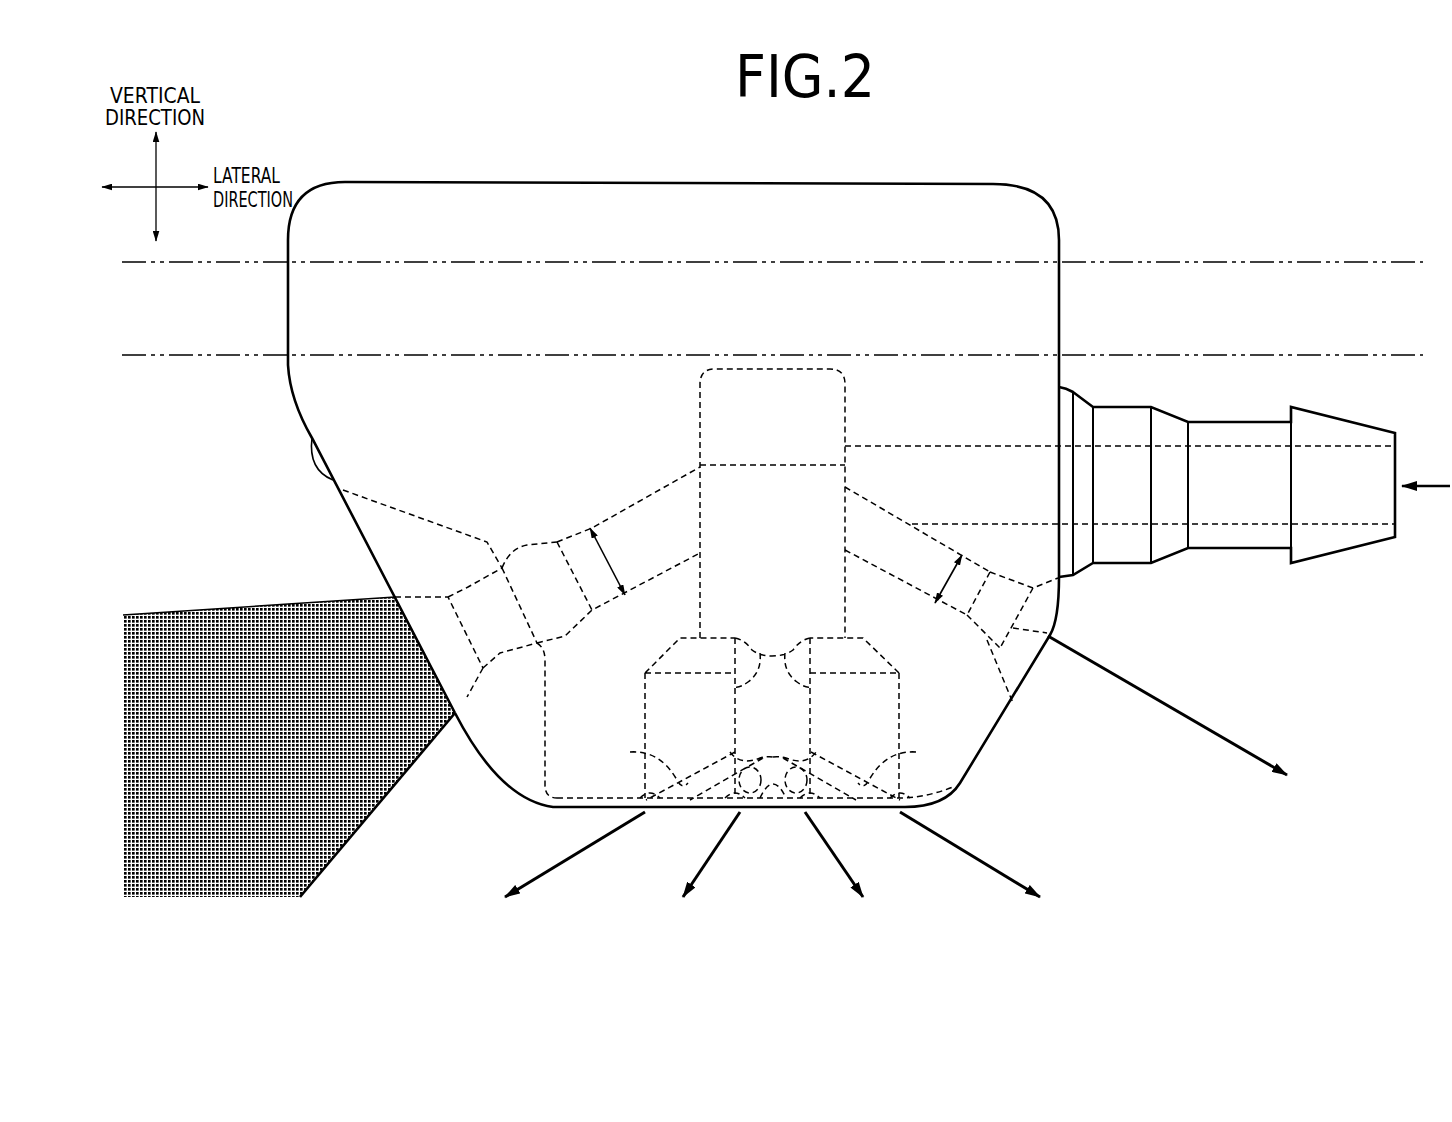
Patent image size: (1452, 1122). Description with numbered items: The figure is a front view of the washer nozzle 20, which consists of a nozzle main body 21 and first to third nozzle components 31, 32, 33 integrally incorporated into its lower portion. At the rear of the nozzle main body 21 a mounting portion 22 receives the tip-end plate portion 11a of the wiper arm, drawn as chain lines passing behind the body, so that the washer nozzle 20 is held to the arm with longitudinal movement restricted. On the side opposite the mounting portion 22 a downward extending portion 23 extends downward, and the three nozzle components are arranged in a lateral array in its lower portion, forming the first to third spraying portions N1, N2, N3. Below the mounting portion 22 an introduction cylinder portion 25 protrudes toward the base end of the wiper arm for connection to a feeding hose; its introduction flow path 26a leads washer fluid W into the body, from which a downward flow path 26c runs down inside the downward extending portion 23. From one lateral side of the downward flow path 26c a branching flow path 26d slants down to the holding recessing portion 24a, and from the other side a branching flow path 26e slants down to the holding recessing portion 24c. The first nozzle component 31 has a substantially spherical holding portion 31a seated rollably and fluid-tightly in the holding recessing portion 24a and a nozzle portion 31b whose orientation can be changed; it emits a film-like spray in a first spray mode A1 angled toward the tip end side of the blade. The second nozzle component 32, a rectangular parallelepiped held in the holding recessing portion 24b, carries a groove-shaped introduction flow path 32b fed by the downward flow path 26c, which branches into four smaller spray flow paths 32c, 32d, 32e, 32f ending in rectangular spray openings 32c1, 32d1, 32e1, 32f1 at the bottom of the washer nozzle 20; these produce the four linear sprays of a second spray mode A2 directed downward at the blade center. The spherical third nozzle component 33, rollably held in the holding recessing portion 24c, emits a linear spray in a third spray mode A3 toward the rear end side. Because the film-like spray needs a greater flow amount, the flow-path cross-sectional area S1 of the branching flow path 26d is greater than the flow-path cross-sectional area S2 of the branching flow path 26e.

The tip-end plate portion 11a is at (1146, 262).
The washer nozzle 20 is at (673, 460).
The nozzle main body 21 is at (930, 183).
The mounting portion 22 is at (626, 190).
The downward extending portion 23 is at (386, 552).
The holding recessing portion 24a is at (594, 633).
The holding recessing portion 24b is at (645, 700).
The holding recessing portion 24c is at (960, 634).
The introduction cylinder portion 25 is at (1238, 422).
The introduction flow path 26a is at (1013, 449).
The downward flow path 26c is at (705, 500).
The branching flow path 26d is at (645, 505).
The branching flow path 26e is at (893, 516).
The first nozzle component 31 is at (557, 493).
The holding portion 31a is at (532, 567).
The nozzle portion 31b is at (475, 597).
The second nozzle component 32 is at (883, 698).
The introduction flow path 32b is at (758, 650).
The spray flow path 32c is at (660, 758).
The spray opening 32c1 is at (640, 795).
The spray flow path 32d is at (716, 760).
The spray opening 32d1 is at (730, 812).
The spray flow path 32e is at (830, 760).
The spray opening 32e1 is at (808, 812).
The spray flow path 32f is at (884, 778).
The spray opening 32f1 is at (960, 787).
The third nozzle component 33 is at (1017, 583).
The flow-path cross-sectional area S1 is at (612, 562).
The flow-path cross-sectional area S2 is at (948, 578).
The first spraying portion N1 is at (462, 733).
The second spraying portion N2 is at (947, 803).
The third spraying portion N3 is at (1040, 663).
The washer fluid W is at (350, 812).
The first spray mode A1 is at (300, 907).
The second spray mode A2 is at (500, 907).
The third spray mode A3 is at (1292, 768).